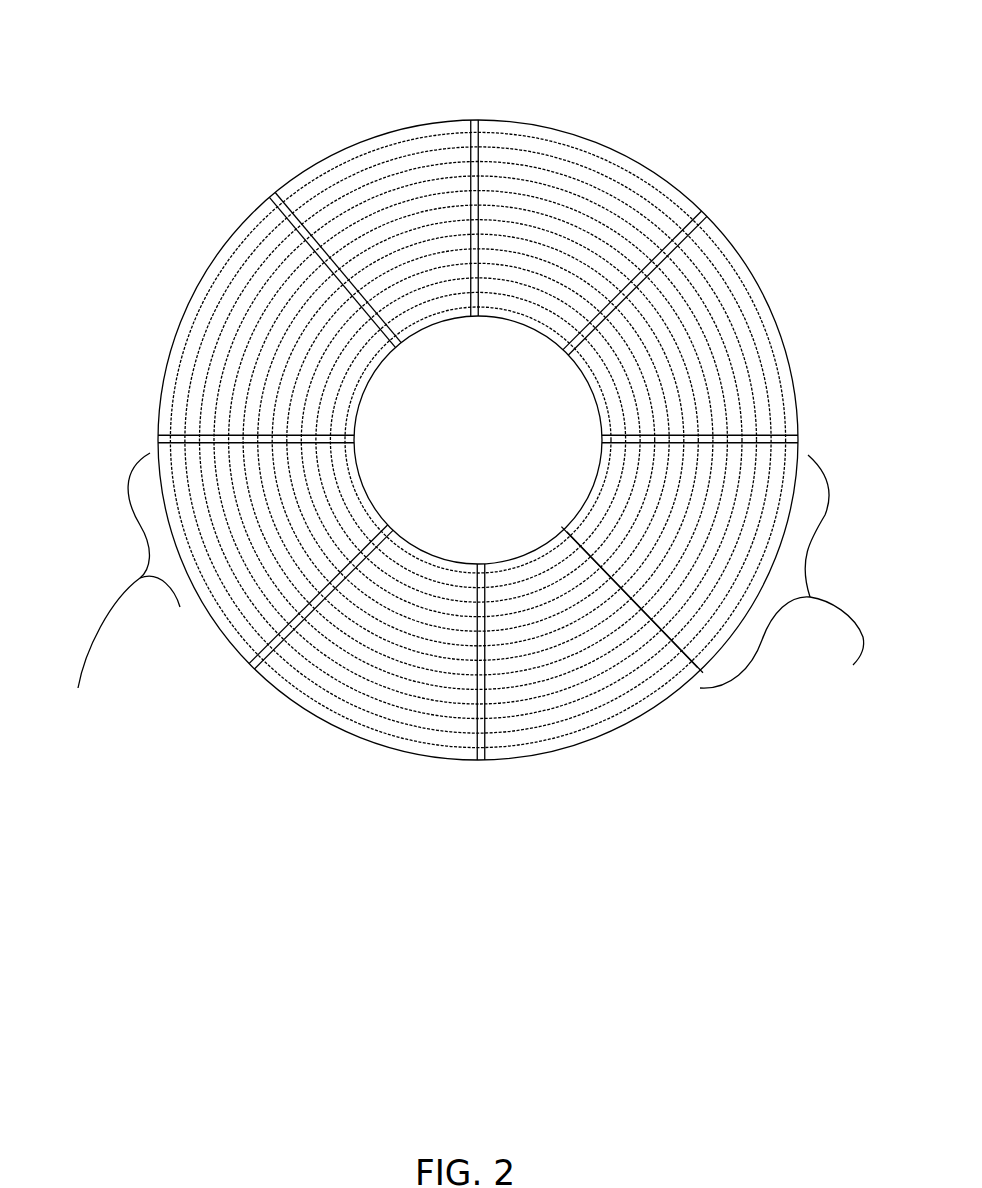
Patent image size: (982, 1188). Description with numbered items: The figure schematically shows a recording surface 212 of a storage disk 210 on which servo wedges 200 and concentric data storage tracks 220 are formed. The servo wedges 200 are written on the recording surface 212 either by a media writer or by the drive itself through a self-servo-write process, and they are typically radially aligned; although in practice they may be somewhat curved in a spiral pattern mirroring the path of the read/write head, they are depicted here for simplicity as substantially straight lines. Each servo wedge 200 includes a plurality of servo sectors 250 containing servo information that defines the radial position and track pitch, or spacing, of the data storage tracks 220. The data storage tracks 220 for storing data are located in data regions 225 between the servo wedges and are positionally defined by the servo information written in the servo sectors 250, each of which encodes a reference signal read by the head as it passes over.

The servo wedges 200 is at (474, 90).
The storage disk 210 is at (262, 200).
The recording surface 212 is at (279, 376).
The data storage tracks 220 is at (725, 260).
The data regions 225 is at (460, 587).
The servo sectors 250 is at (478, 312).